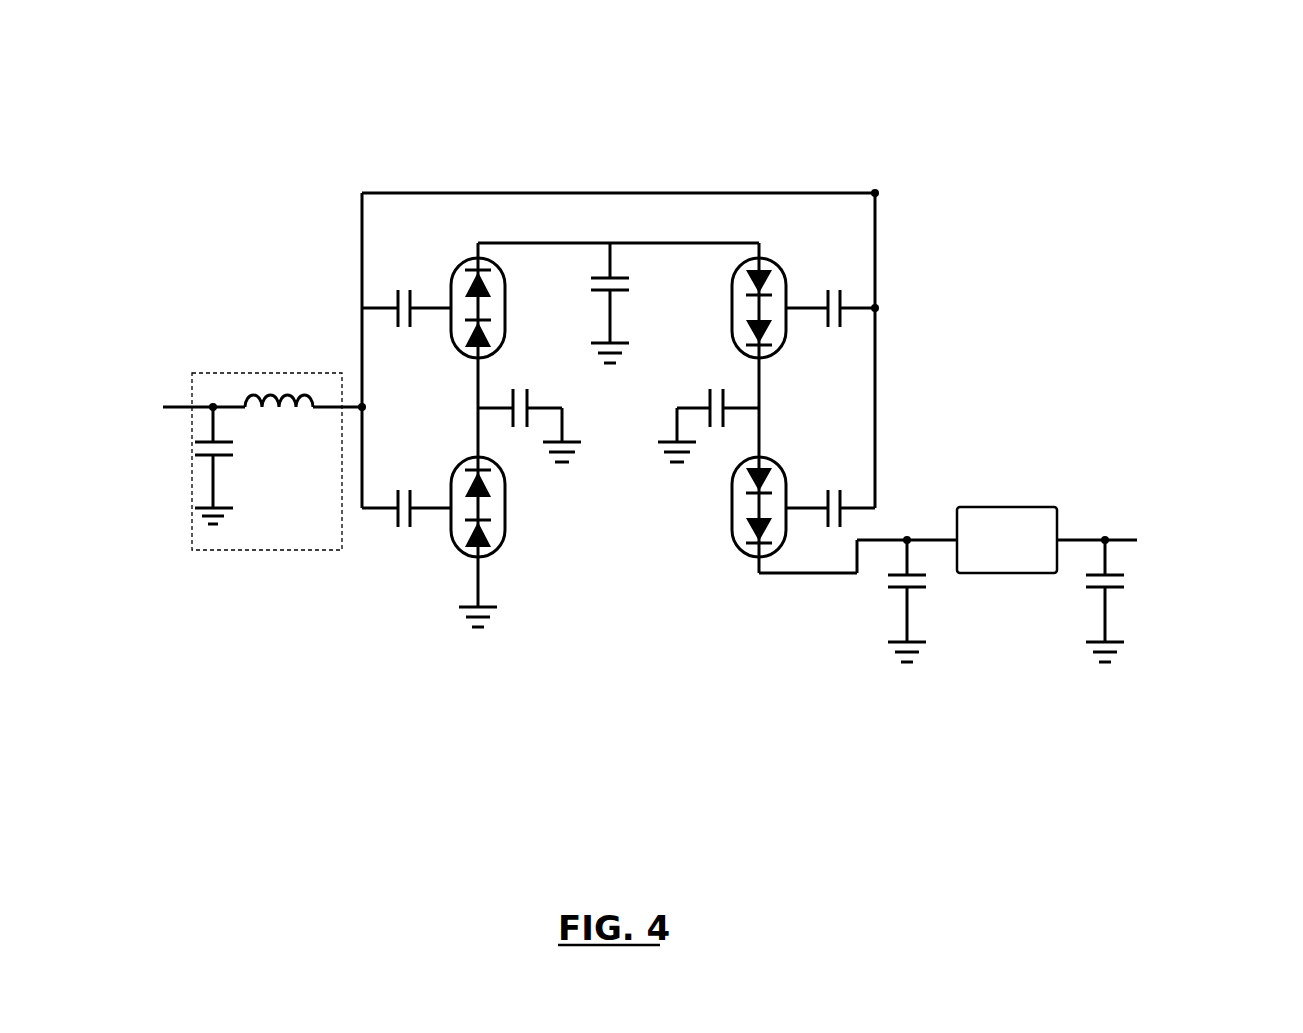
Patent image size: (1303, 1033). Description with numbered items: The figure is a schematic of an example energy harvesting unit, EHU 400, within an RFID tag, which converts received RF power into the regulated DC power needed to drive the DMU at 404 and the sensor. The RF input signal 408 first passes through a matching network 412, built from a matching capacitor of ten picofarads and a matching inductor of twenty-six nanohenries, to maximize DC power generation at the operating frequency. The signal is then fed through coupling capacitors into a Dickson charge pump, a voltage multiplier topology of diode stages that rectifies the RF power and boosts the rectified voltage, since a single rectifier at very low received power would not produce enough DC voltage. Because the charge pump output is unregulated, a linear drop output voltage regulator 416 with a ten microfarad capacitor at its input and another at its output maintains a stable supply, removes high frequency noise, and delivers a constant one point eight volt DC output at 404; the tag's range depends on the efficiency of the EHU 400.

The energy harvesting unit (EHU) 400 is at (252, 58).
The DC output to the DMU 404 is at (1130, 540).
The input signal 408 is at (183, 408).
The matching network 412 is at (273, 552).
The voltage regulator 416 is at (1015, 507).